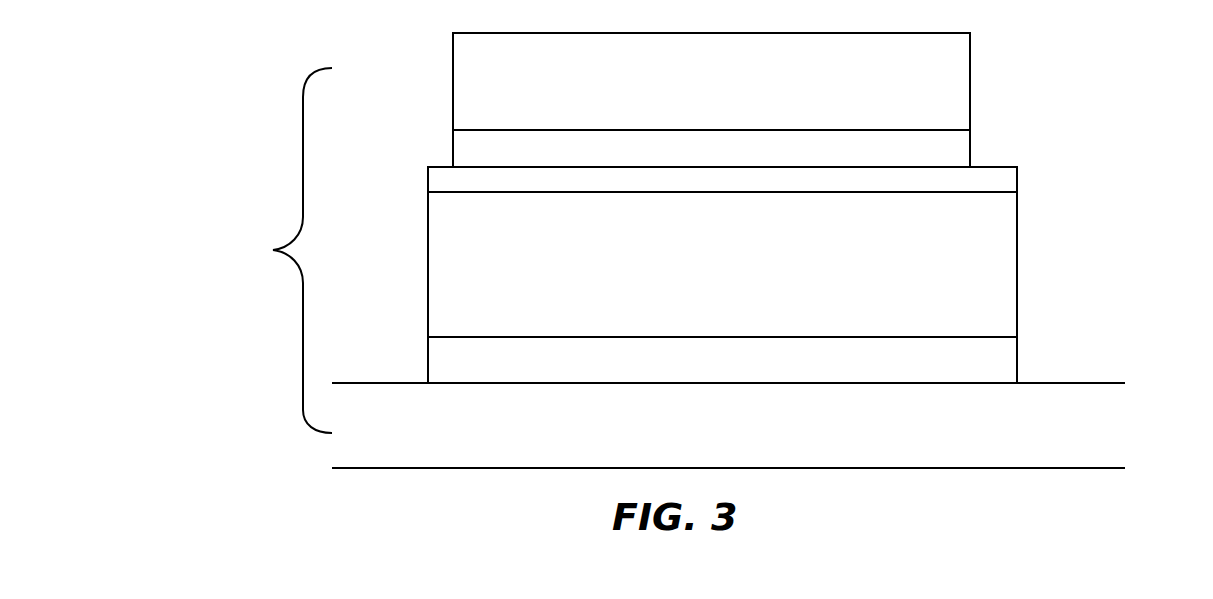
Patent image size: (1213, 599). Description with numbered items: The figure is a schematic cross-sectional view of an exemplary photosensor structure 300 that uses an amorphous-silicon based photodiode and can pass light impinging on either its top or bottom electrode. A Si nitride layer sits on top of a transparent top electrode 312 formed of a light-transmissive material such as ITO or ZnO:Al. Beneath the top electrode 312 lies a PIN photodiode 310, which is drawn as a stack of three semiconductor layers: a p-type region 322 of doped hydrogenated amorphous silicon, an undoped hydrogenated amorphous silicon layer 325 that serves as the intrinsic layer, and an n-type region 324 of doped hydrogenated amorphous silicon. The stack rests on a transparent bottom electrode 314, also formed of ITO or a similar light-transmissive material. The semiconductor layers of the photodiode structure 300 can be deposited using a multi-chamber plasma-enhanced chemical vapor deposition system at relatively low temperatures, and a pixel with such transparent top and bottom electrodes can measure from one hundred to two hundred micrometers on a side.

The photosensor structure 300 is at (1127, 54).
The PIN photodiode 310 is at (286, 250).
The top electrode 312 is at (970, 142).
The p-type region 322 is at (1017, 177).
The intrinsic layer 325 is at (1017, 263).
The n-type region 324 is at (1017, 347).
The bottom electrode 314 is at (1087, 443).